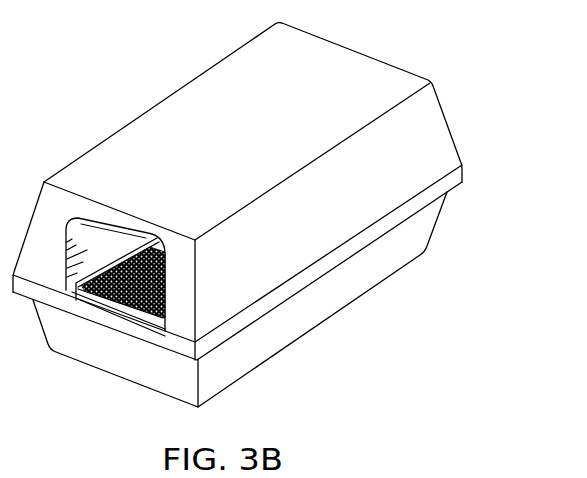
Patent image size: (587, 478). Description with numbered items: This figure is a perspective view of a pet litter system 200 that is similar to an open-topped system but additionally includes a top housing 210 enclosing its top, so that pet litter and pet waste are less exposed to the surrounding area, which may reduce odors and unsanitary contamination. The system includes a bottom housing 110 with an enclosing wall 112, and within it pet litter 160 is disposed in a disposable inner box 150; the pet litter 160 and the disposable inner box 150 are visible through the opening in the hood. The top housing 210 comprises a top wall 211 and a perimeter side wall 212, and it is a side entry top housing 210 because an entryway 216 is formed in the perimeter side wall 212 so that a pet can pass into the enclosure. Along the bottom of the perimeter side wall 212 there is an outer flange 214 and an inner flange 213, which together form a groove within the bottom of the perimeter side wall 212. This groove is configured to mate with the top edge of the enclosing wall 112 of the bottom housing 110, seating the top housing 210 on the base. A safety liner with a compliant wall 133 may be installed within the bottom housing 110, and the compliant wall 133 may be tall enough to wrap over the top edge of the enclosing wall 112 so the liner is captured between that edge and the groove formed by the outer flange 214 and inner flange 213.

The pet litter system 200 is at (230, 40).
The top housing 210 is at (188, 77).
The top wall 211 is at (220, 130).
The perimeter side wall 212 is at (337, 203).
The inner flange 213 is at (87, 250).
The outer flange 214 is at (330, 265).
The entryway 216 is at (166, 286).
The bottom housing 110 is at (327, 328).
The enclosing wall 112 is at (250, 340).
The compliant wall 133 is at (90, 278).
The disposable inner box 150 is at (90, 265).
The pet litter 160 is at (74, 285).